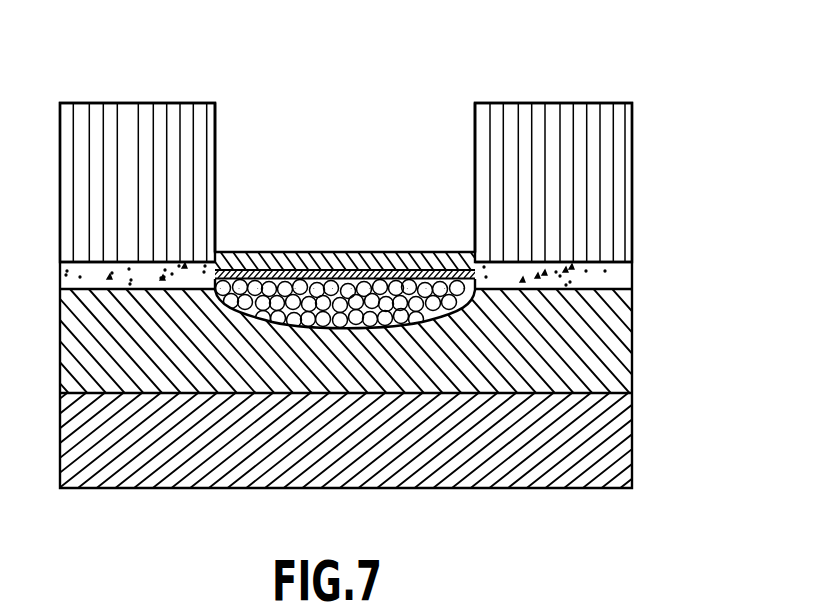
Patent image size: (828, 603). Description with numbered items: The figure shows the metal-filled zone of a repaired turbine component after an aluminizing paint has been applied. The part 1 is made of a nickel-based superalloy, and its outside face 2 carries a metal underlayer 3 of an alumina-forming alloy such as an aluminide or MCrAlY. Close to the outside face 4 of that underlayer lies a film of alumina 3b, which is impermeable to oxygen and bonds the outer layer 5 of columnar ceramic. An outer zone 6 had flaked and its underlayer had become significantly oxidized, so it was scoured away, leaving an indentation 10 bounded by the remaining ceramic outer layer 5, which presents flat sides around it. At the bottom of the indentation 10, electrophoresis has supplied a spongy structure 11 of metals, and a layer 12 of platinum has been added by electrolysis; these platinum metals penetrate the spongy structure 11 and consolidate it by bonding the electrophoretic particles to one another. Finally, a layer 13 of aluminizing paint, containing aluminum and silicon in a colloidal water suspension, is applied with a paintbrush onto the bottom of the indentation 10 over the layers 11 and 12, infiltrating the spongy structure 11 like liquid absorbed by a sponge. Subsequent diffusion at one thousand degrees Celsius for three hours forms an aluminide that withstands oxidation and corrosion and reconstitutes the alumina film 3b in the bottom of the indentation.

The part 1 is at (603, 445).
The outside face of the part 2 is at (585, 393).
The metal underlayer 3 is at (585, 340).
The film of alumina 3b is at (575, 276).
The outside face of the underlayer 4 is at (592, 262).
The outer layer of columnar ceramic 5 is at (598, 172).
The outer zone 6 is at (431, 84).
The indentation 10 is at (319, 124).
The spongy structure 11 is at (395, 295).
The layer of platinum 12 is at (254, 272).
The layer of aluminizing paint 13 is at (331, 265).